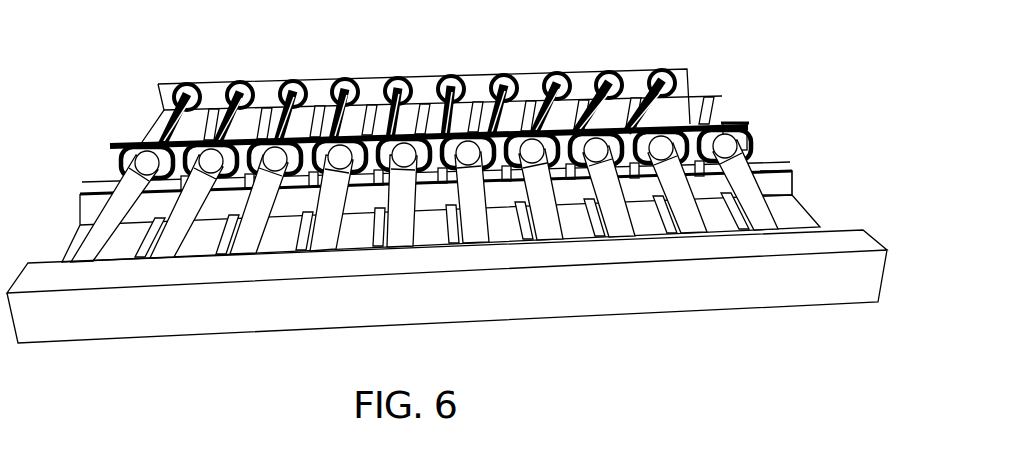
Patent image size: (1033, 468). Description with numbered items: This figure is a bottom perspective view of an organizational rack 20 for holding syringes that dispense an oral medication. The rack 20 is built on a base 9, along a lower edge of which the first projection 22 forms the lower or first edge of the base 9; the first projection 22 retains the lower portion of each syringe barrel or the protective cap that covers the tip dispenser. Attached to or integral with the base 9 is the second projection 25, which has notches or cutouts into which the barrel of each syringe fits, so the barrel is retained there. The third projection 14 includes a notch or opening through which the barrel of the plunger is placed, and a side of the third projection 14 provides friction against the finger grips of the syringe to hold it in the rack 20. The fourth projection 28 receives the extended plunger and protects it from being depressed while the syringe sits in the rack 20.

The base 9 is at (157, 127).
The third projection 14 is at (747, 125).
The rack 20 is at (472, 194).
The first projection 22 is at (868, 240).
The second projection 25 is at (777, 172).
The fourth projection 28 is at (592, 72).